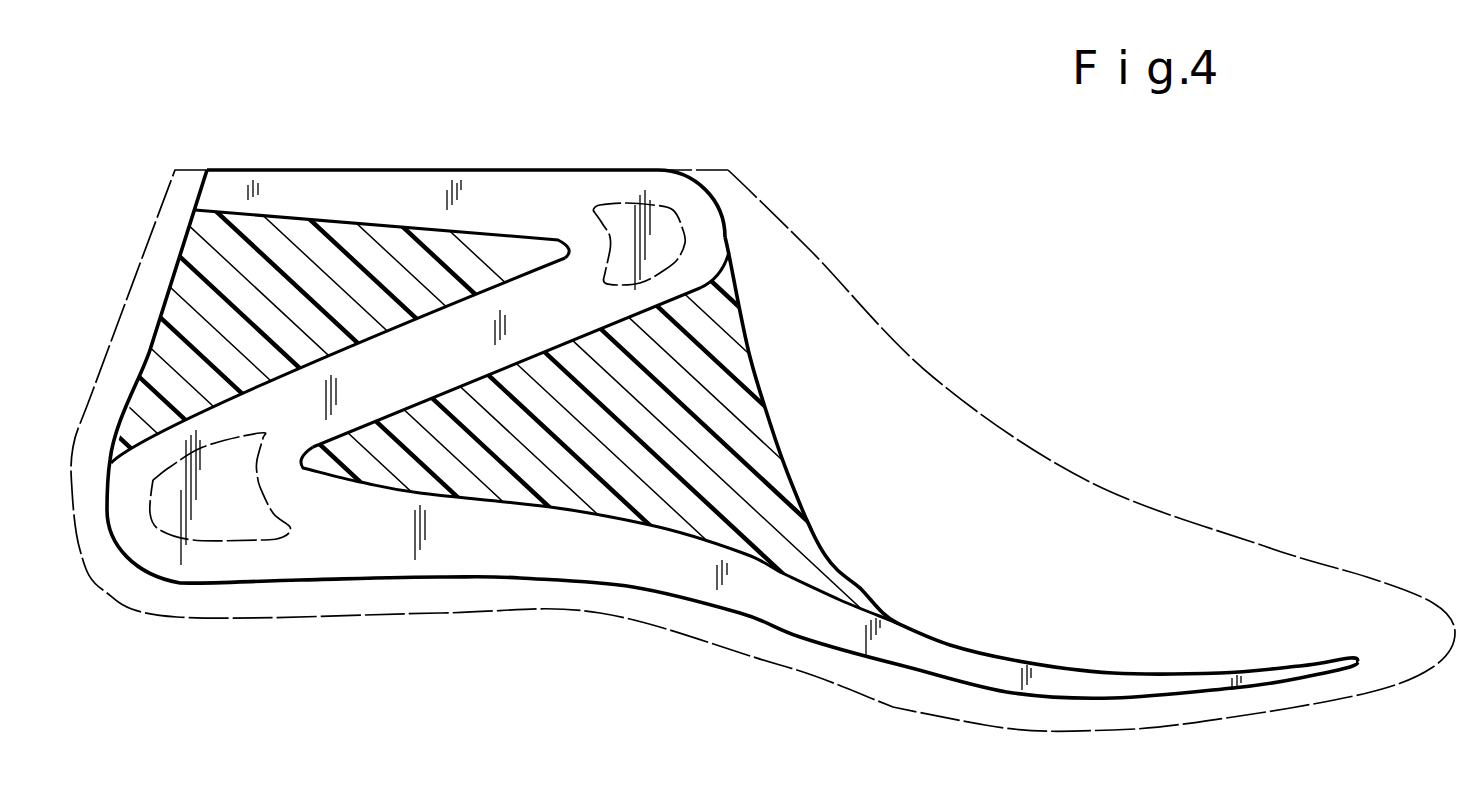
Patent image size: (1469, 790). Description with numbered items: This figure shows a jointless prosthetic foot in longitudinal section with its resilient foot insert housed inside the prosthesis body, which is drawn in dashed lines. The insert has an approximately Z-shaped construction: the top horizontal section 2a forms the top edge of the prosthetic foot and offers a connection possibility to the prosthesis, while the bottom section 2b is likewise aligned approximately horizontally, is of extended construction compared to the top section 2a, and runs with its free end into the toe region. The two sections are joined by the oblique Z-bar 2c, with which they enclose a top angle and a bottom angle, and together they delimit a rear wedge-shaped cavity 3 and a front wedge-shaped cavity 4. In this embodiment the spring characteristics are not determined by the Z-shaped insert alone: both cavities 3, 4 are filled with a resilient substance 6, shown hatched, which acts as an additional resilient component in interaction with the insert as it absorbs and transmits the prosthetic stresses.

The top section 2a is at (498, 203).
The bottom section 2b is at (482, 548).
The oblique Z-bar 2c is at (445, 350).
The rear wedge-shaped cavity 3 is at (162, 257).
The front wedge-shaped cavity 4 is at (788, 417).
The resilient substance 6 is at (305, 295).